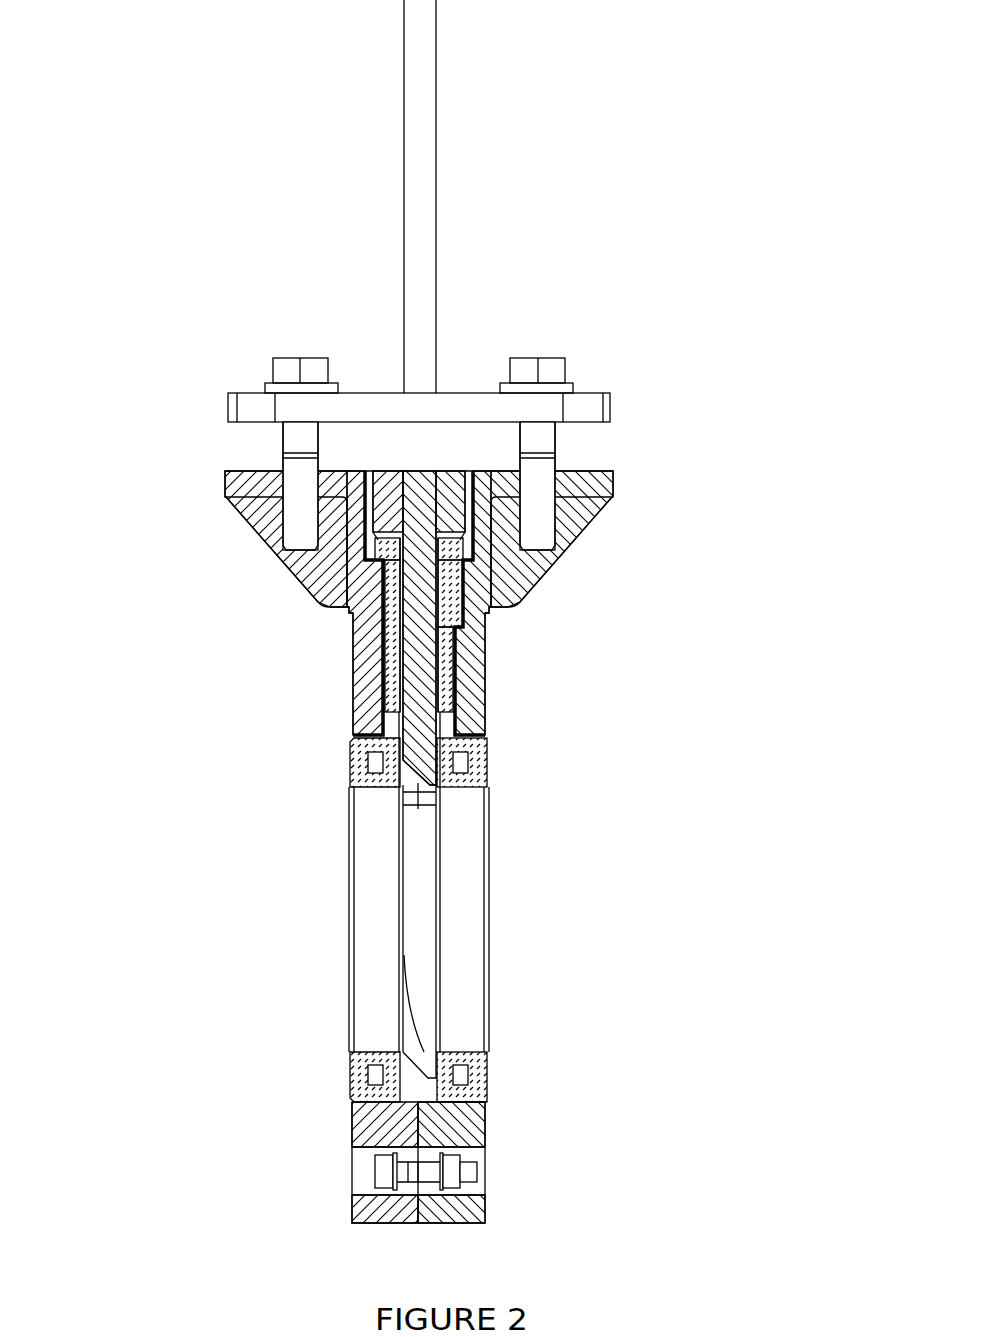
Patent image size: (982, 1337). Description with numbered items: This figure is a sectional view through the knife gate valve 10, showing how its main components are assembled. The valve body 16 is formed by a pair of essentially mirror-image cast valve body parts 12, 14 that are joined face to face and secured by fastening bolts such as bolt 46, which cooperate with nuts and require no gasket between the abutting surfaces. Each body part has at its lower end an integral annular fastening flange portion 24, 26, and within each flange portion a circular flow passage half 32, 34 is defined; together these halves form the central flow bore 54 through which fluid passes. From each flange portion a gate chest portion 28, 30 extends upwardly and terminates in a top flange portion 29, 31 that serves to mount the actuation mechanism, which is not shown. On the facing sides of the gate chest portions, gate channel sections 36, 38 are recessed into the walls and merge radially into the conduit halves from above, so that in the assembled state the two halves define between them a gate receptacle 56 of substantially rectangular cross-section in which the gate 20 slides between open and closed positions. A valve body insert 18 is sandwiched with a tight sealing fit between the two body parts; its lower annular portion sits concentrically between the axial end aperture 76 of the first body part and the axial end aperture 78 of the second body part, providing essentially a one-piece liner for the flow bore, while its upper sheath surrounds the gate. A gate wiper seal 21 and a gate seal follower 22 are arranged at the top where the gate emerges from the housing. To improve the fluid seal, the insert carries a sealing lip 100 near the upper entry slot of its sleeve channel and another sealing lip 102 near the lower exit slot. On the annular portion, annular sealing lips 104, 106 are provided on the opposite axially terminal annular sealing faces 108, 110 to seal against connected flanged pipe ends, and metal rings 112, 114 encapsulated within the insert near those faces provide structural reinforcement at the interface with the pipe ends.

The knife gate valve 10 is at (172, 654).
The valve body casting part 12 is at (340, 668).
The valve body casting part 14 is at (496, 678).
The valve body 16 is at (540, 612).
The valve body insert 18 is at (463, 711).
The gate 20 is at (424, 727).
The gate wiper seal 21 is at (456, 523).
The gate seal follower 22 is at (624, 401).
The annular fastening flange portion 24 is at (373, 1120).
The annular fastening flange portion 26 is at (490, 1120).
The gate chest portion 28 is at (353, 717).
The flange 29 is at (224, 494).
The gate chest portion 30 is at (473, 655).
The flange 31 is at (604, 484).
The flow passage half 32 is at (313, 906).
The flow passage half 34 is at (512, 904).
The gate channel section 36 is at (357, 642).
The gate channel section 38 is at (455, 586).
The fastening bolt 46 is at (373, 1172).
The central flow bore 54 is at (430, 886).
The gate receptacle 56 is at (357, 610).
The axial end aperture 76 is at (347, 928).
The axial end aperture 78 is at (488, 928).
The sealing lip 100 is at (375, 568).
The sealing lip 102 is at (357, 703).
The annular sealing lip 104 is at (350, 1063).
The annular sealing lip 106 is at (291, 1051).
The annular sealing face 108 is at (353, 763).
The annular sealing face 110 is at (490, 1078).
The metal ring 112 is at (350, 778).
The metal ring 114 is at (470, 770).